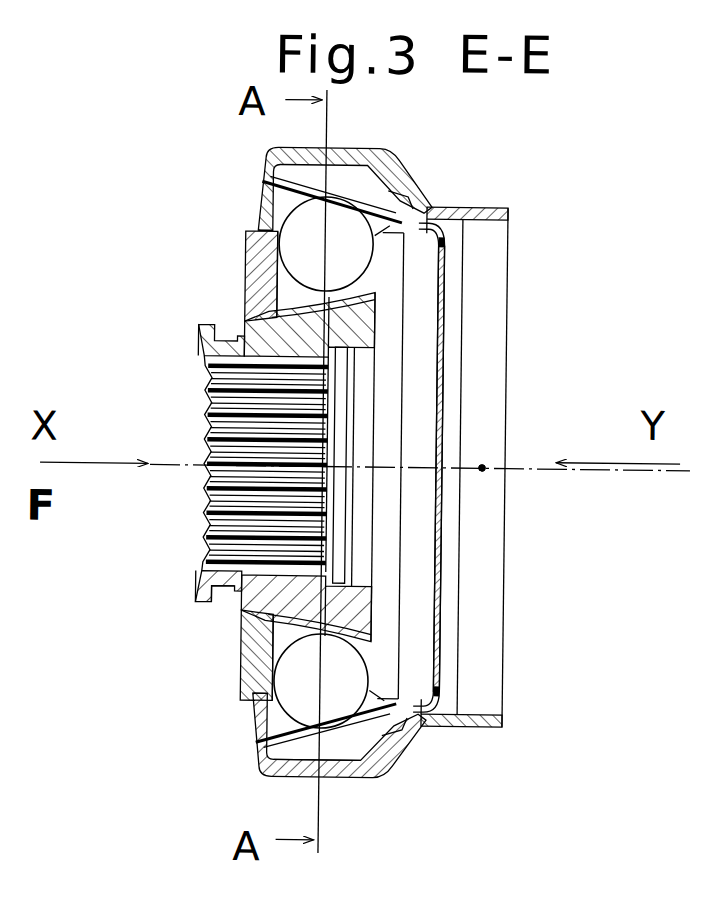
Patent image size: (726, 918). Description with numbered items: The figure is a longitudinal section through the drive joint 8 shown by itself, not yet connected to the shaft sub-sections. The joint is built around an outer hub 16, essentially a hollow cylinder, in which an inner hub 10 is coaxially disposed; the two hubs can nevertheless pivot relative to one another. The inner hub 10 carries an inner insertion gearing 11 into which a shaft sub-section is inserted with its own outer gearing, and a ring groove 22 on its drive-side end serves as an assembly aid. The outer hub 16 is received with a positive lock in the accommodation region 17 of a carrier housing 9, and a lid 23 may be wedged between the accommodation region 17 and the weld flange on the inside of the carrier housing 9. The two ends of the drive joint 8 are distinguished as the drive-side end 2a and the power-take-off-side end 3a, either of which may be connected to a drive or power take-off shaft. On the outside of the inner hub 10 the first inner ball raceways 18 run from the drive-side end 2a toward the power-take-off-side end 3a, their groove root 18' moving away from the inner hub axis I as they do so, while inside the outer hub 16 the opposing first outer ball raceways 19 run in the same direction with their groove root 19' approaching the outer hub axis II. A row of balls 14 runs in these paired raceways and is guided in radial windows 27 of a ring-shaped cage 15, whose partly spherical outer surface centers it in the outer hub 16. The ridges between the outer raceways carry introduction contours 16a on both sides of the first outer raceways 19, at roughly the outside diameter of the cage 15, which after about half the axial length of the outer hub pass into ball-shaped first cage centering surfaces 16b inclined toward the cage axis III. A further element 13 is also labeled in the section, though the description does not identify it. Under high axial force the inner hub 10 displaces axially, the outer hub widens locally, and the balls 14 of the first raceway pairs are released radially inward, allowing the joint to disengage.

The drive-side end 2a is at (196, 343).
The power-take-off-side end 3a is at (383, 606).
The drive joint 8 is at (520, 855).
The carrier housing 9 is at (342, 240).
The inner hub 10 is at (355, 317).
The inner insertion gearing 11 is at (221, 418).
The pulley web 13 is at (206, 329).
The balls 14 is at (399, 199).
The cage 15 is at (382, 684).
The outer hub 16 is at (362, 188).
The introduction contours 16a is at (264, 223).
The first cage centering surfaces 16b is at (427, 202).
The accommodation region 17 is at (309, 772).
The first inner ball raceways 18 is at (186, 448).
The groove root 18' is at (191, 464).
The first outer ball raceways 19 is at (242, 425).
The groove root 19' is at (335, 418).
The ring groove 22 is at (226, 607).
The lid 23 is at (443, 235).
The radial windows 27 is at (399, 272).
The inner hub axis I is at (482, 466).
The outer hub axis II is at (557, 503).
The cage axis III is at (597, 504).